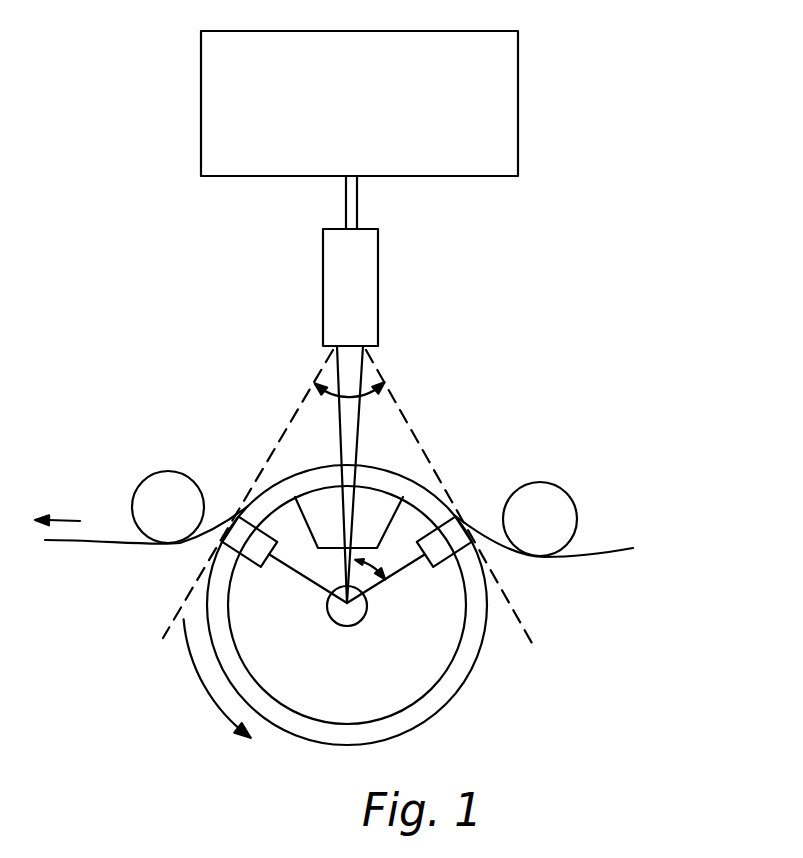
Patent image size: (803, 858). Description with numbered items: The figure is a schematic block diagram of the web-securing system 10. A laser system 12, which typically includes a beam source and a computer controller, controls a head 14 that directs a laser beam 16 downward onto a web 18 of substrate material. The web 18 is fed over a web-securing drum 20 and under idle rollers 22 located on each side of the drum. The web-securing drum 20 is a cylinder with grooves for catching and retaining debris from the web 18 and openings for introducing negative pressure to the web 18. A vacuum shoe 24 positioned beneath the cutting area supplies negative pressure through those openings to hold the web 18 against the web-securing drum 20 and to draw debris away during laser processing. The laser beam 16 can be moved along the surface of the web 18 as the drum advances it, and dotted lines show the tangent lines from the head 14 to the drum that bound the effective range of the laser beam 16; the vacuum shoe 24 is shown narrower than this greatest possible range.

The web-securing system 10 is at (586, 180).
The laser system 12 is at (222, 77).
The head 14 is at (367, 298).
The laser beam 16 is at (370, 360).
The web 18 is at (90, 541).
The web-securing drum 20 is at (483, 706).
The idle rollers 22 is at (163, 487).
The vacuum shoe 24 is at (312, 505).